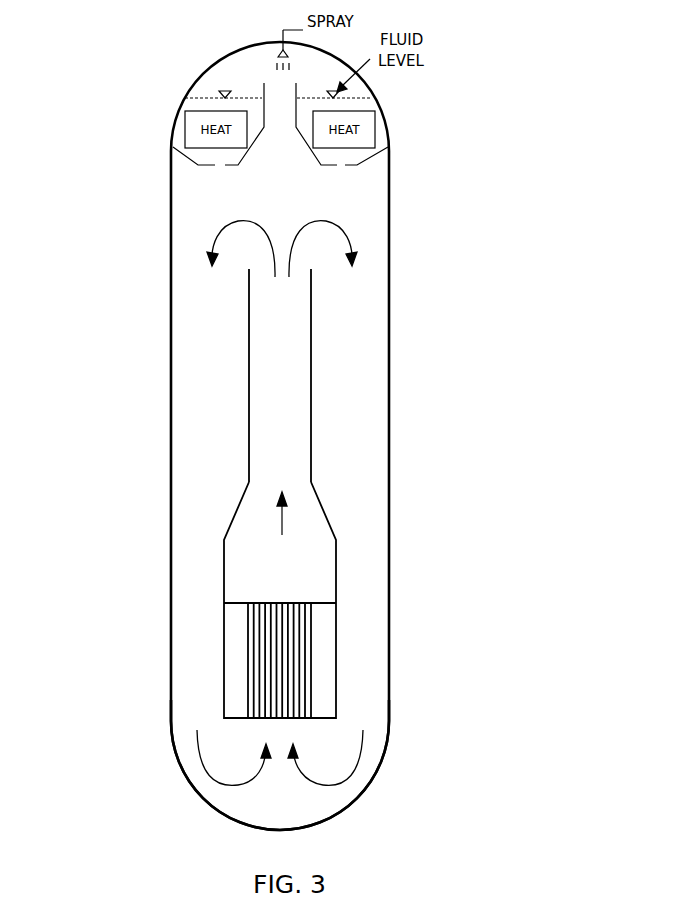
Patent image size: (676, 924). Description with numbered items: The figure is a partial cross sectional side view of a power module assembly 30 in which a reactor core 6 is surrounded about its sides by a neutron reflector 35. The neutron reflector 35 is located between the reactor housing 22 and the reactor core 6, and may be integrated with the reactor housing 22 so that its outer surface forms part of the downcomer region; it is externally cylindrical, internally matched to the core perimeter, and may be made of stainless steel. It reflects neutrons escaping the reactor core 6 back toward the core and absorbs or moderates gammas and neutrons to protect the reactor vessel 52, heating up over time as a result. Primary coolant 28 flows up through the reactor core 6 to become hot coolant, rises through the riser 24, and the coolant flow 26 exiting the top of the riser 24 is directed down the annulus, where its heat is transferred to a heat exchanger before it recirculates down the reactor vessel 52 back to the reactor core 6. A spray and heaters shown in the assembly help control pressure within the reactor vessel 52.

The power module assembly 30 is at (452, 108).
The coolant flow 26 is at (362, 251).
The riser 24 is at (323, 370).
The reactor housing 22 is at (223, 585).
The reactor core 6 is at (290, 593).
The neutron reflector 35 is at (323, 652).
The primary coolant 28 is at (198, 765).
The reactor vessel 52 is at (400, 745).